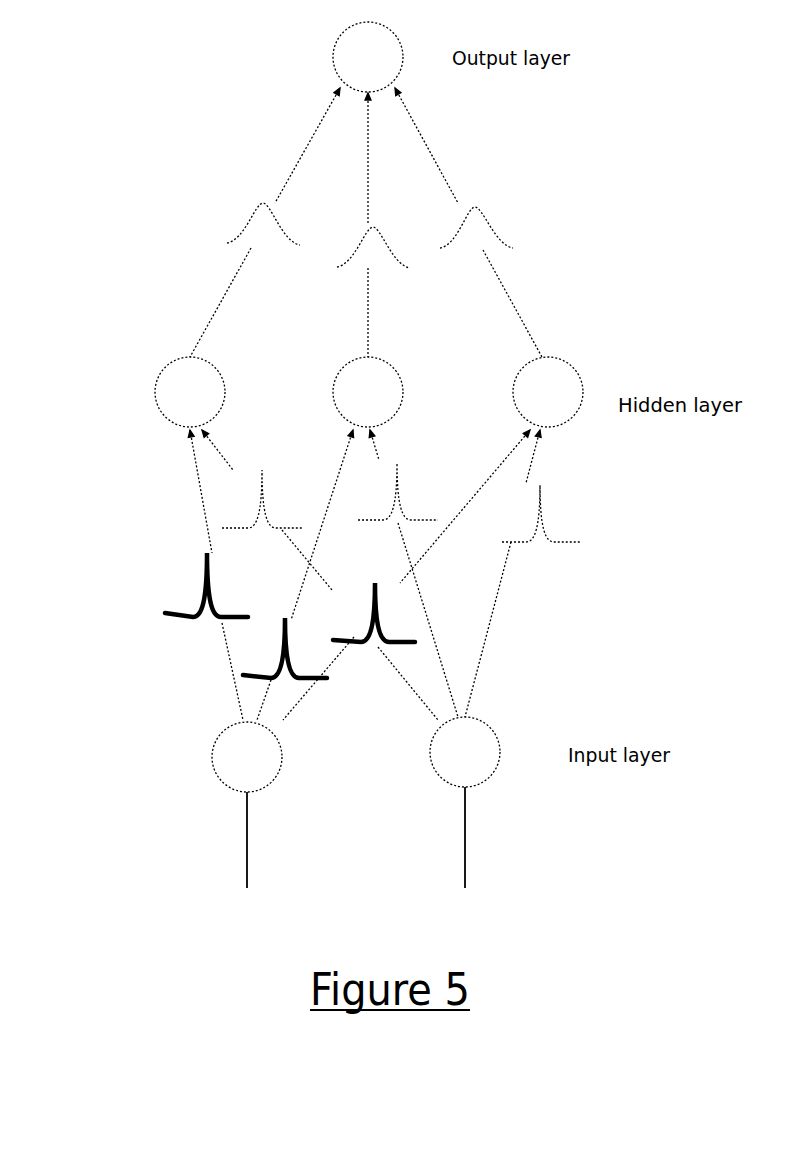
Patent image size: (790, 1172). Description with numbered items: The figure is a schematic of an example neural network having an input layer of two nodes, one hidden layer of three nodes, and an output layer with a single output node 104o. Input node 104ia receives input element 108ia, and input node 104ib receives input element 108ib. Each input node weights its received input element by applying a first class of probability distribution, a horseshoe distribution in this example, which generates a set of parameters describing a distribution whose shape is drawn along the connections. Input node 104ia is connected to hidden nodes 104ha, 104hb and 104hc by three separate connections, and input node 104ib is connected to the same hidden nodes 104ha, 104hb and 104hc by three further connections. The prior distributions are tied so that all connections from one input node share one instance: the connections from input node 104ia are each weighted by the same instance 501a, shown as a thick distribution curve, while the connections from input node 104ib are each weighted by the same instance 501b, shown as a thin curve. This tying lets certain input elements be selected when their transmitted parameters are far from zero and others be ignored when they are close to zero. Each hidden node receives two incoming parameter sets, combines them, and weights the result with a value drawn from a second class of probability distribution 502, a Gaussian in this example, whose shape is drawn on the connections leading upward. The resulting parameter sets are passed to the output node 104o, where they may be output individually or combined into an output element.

The output node 104o is at (333, 52).
The hidden node 104ha is at (155, 393).
The hidden node 104hb is at (335, 398).
The hidden node 104hc is at (517, 407).
The input node 104ia is at (212, 765).
The input node 104ib is at (430, 752).
The input element 108ia is at (247, 853).
The input element 108ib is at (465, 853).
The instance of the first class of probability distribution 501a is at (173, 617).
The instance of the first class of probability distribution 501b is at (572, 542).
The second class of probability distribution 502 is at (228, 242).